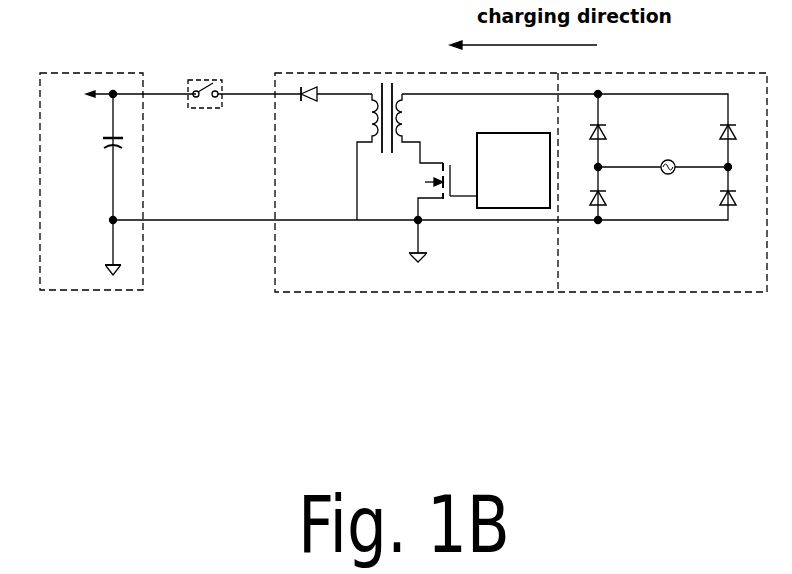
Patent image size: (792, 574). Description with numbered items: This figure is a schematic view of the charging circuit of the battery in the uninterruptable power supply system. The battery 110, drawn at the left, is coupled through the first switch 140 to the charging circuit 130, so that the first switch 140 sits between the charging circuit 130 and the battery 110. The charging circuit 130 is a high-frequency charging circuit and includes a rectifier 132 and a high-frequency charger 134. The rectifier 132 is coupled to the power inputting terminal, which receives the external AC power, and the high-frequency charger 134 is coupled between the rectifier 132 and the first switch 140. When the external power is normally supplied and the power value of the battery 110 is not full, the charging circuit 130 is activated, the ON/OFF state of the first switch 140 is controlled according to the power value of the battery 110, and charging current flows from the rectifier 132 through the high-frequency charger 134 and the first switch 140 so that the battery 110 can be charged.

The battery 110 is at (88, 74).
The first switch 140 is at (214, 80).
The charging circuit 130 is at (742, 362).
The high-frequency charger 134 is at (443, 293).
The rectifier 132 is at (657, 293).